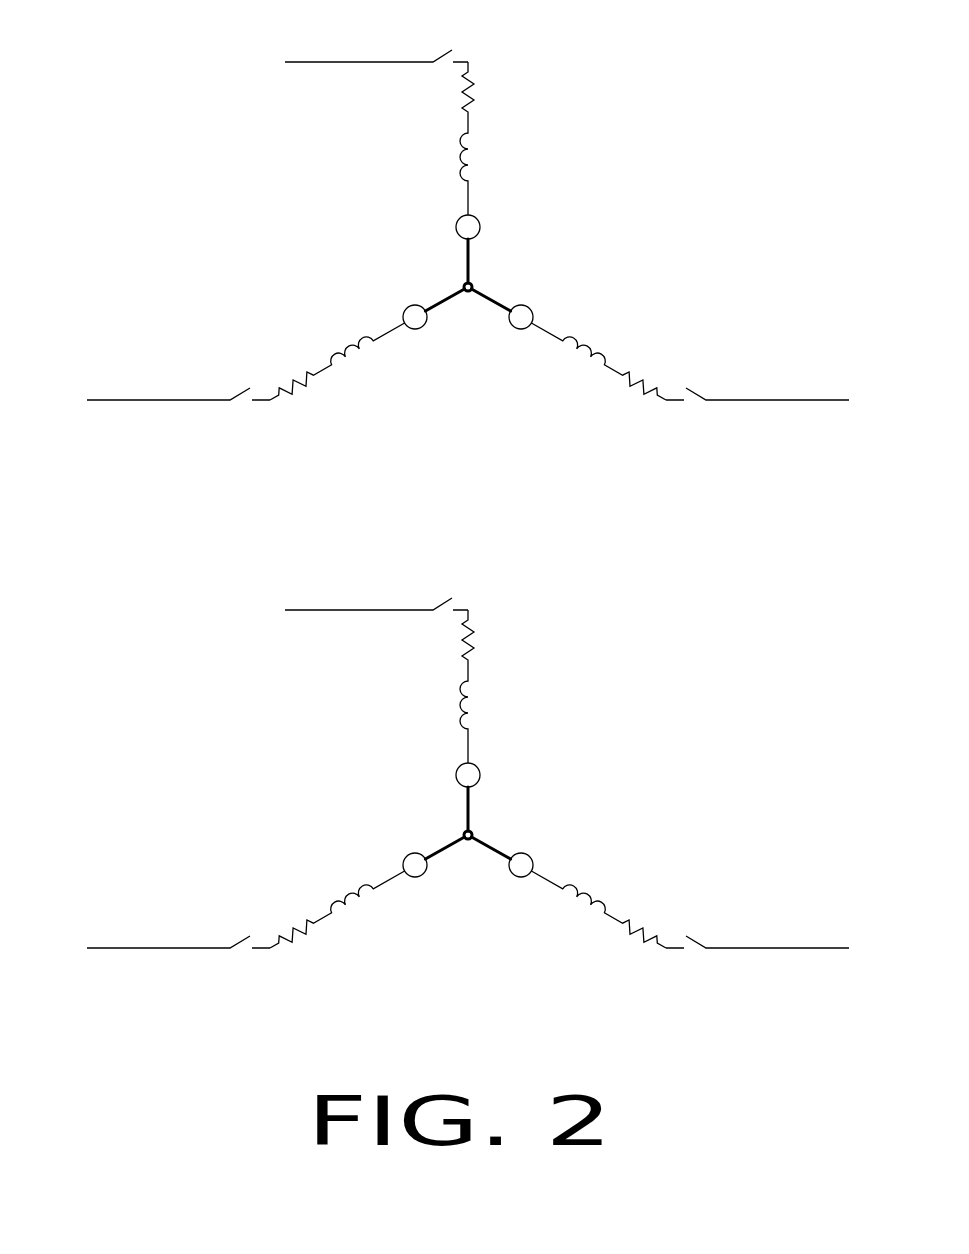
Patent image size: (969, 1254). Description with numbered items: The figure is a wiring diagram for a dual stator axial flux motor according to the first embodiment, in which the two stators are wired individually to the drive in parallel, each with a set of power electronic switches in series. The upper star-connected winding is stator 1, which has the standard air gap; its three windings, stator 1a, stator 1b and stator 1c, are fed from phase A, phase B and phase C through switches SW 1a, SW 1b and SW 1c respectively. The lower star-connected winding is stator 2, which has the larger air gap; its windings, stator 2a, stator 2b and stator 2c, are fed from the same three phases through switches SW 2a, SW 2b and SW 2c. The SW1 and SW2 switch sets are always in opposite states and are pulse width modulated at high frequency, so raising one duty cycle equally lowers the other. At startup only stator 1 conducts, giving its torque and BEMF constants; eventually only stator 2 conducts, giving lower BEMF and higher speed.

The stator 1 is at (475, 260).
The stator 2 is at (475, 742).
The stator 1a winding 1a is at (367, 129).
The stator 1b winding 1b is at (236, 368).
The stator 1c winding 1c is at (710, 368).
The stator 2a winding 2a is at (367, 677).
The stator 2b winding 2b is at (236, 916).
The stator 2c winding 2c is at (710, 916).